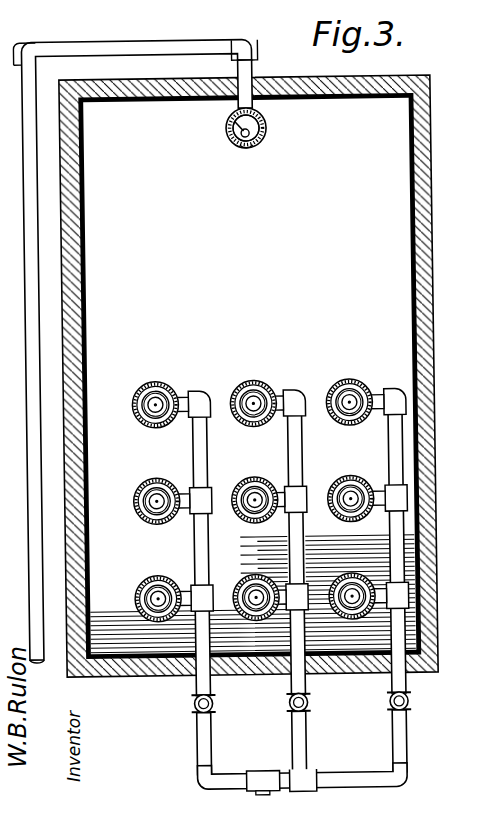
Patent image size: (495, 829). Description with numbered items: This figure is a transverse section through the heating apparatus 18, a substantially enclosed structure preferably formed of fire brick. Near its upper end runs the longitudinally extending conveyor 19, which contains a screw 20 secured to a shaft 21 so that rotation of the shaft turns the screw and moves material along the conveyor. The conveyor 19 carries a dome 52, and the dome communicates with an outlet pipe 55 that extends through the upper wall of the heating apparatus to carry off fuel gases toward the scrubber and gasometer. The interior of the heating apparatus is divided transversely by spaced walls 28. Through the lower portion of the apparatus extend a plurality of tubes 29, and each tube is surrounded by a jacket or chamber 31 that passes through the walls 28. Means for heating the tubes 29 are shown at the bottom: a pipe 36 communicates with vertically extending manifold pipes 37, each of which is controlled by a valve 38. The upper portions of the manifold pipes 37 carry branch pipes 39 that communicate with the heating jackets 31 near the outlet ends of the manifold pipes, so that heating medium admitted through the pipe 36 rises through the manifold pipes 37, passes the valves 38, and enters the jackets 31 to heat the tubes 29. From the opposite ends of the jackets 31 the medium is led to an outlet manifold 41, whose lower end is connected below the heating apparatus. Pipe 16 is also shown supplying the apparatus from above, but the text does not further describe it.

The supply pipe 16 is at (26, 170).
The heating apparatus 18 is at (304, 77).
The conveyor 19 is at (251, 148).
The screw 20 is at (230, 132).
The shaft 21 is at (258, 137).
The walls 28 is at (249, 376).
The tubes 29 is at (253, 398).
The jackets or chambers 31 is at (330, 386).
The pipe 36 is at (349, 774).
The manifold pipes 37 is at (192, 748).
The valves 38 is at (188, 706).
The branch pipes 39 is at (188, 486).
The outlet manifold 41 is at (206, 464).
The dome 52 is at (268, 118).
The outlet pipe 55 is at (242, 69).